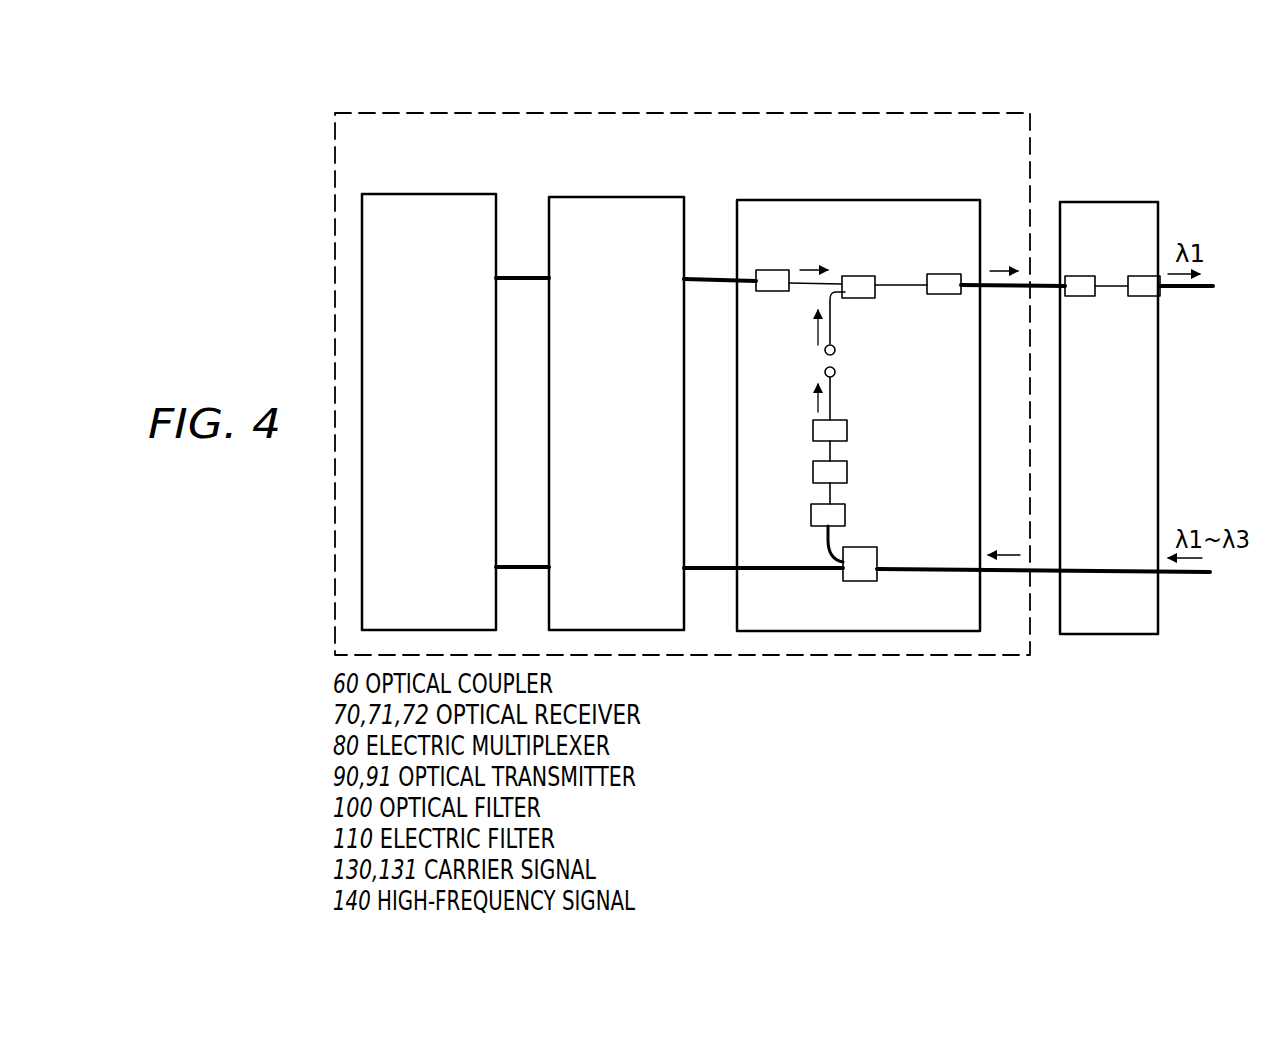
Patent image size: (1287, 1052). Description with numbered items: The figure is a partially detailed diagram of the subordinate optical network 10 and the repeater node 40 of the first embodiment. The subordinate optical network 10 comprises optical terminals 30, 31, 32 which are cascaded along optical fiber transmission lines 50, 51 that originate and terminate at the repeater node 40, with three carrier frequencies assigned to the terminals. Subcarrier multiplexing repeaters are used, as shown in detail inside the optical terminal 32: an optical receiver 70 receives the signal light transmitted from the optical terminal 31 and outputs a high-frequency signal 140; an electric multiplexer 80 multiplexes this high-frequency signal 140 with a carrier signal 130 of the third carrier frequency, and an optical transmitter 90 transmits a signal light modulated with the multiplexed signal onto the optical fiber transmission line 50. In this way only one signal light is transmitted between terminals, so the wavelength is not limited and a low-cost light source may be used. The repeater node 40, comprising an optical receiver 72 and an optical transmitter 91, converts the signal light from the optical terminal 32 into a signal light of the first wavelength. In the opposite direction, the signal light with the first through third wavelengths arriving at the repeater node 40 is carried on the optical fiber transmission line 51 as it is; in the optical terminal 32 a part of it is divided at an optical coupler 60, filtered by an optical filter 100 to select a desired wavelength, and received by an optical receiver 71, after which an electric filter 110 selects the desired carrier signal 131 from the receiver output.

The subordinate optical network 10 is at (651, 113).
The optical terminal 30 is at (373, 194).
The optical terminal 31 is at (579, 197).
The optical terminal 32 is at (821, 200).
The repeater node 40 is at (1098, 202).
The optical fiber transmission line 50 is at (1000, 287).
The optical fiber transmission line 51 is at (997, 573).
The optical coupler 60 is at (865, 577).
The optical receiver 70 is at (761, 270).
The optical receiver 71 is at (849, 472).
The optical receiver 72 is at (1078, 276).
The electric multiplexer 80 is at (862, 280).
The optical transmitter 90 is at (946, 278).
The optical transmitter 91 is at (1138, 276).
The optical filter 100 is at (848, 514).
The electric filter 110 is at (849, 431).
The carrier signal 130 is at (815, 330).
The carrier signal 131 is at (815, 405).
The high-frequency signal 140 is at (803, 270).